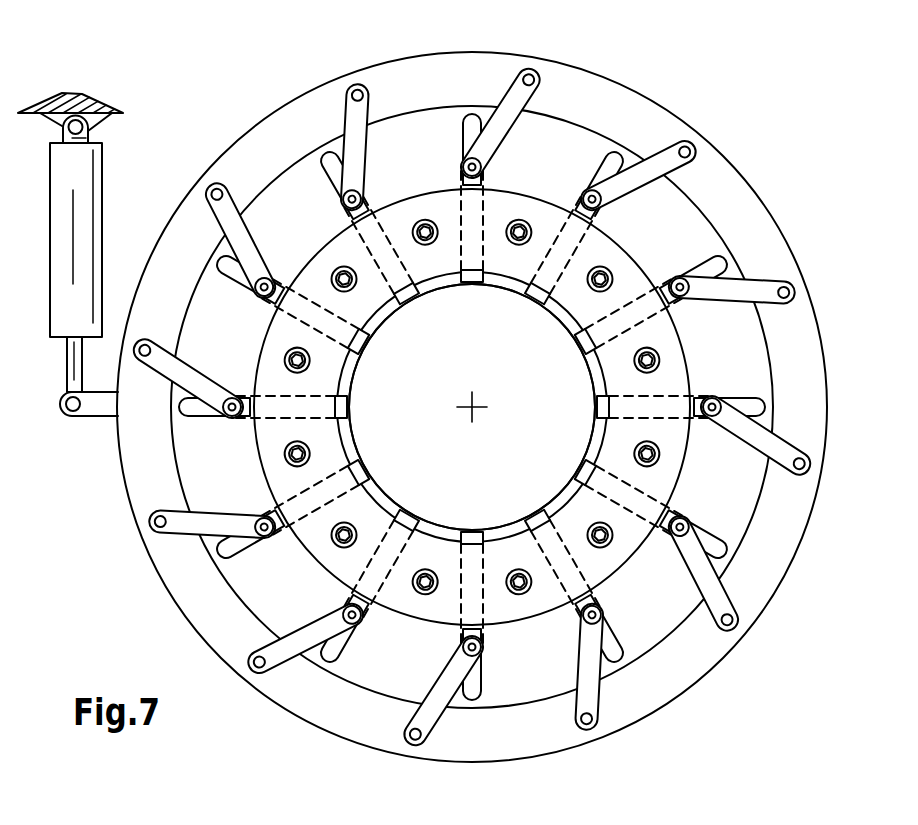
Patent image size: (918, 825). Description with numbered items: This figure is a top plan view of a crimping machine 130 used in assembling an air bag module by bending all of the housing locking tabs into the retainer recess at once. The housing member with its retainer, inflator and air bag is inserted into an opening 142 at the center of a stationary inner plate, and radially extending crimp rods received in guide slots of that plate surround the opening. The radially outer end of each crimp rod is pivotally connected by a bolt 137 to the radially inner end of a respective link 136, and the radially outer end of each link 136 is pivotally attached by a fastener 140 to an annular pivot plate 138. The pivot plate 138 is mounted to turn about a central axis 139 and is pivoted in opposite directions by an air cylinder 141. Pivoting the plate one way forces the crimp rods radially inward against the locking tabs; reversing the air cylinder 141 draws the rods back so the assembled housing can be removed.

The crimping machine 130 is at (588, 215).
The link 136 is at (640, 167).
The bolt 137 is at (590, 198).
The annular pivot plate 138 is at (733, 210).
The central axis 139 is at (470, 404).
The fastener 140 is at (692, 146).
The air cylinder 141 is at (85, 185).
The opening 142 is at (502, 481).